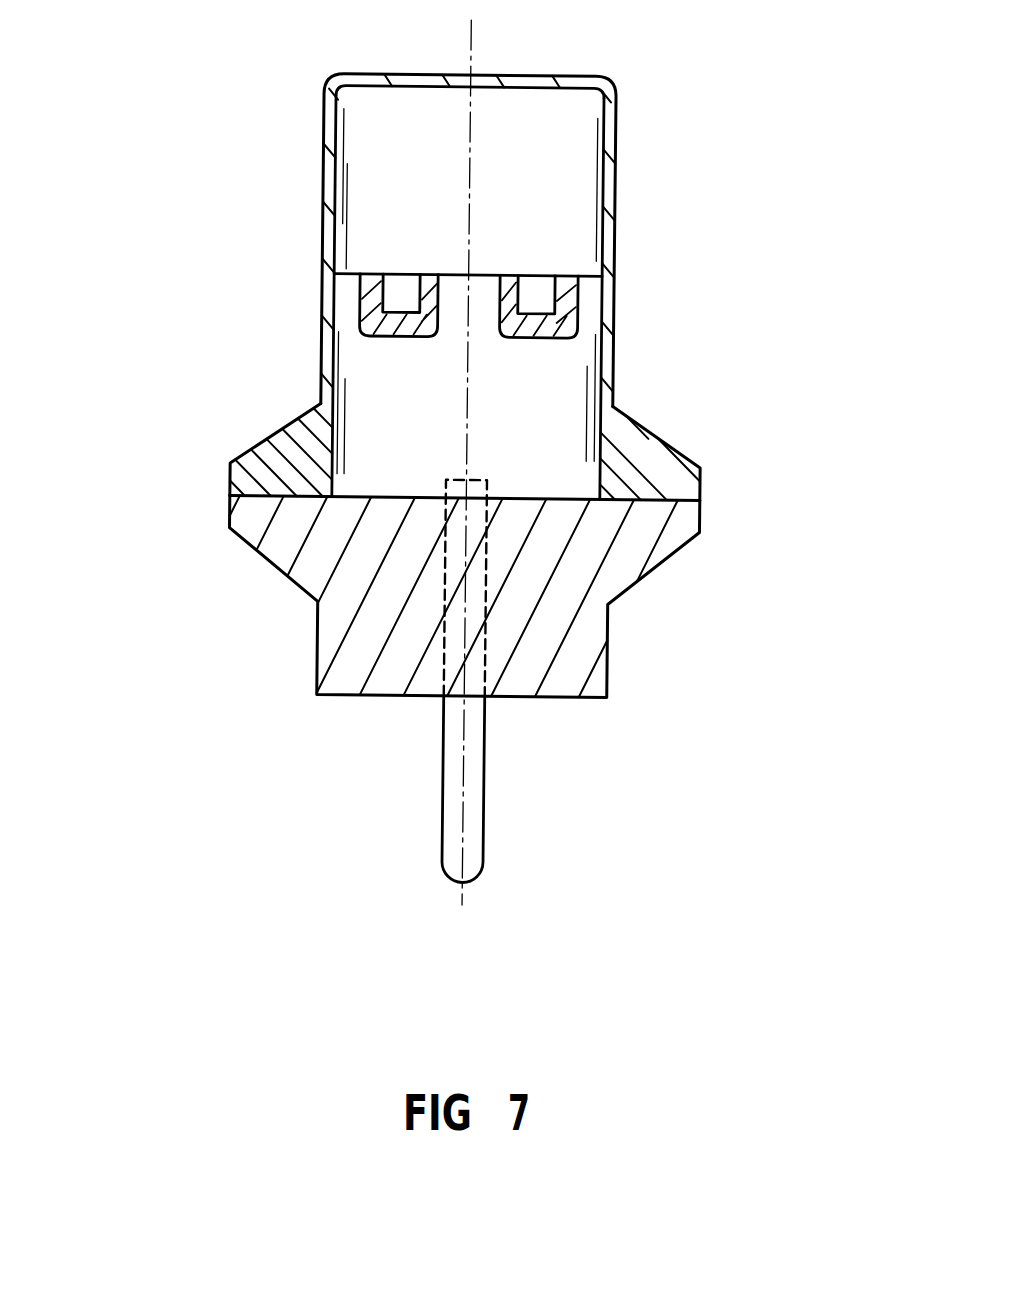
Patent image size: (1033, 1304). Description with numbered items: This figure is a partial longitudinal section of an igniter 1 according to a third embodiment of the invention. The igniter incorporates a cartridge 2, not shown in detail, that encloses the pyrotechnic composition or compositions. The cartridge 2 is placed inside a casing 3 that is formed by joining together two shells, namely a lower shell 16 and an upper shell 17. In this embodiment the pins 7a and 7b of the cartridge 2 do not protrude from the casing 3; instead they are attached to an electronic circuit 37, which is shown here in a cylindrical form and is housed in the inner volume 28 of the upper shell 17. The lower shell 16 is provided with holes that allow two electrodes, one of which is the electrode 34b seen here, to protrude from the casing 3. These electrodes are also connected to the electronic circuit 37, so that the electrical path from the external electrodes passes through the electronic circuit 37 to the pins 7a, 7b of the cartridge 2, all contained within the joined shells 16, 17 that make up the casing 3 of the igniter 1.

The valve assembly 1 is at (663, 217).
The cartridge 2 is at (508, 167).
The casing 3 is at (288, 417).
The pin 7a is at (402, 298).
The pin 7b is at (530, 295).
The lower shell 16 is at (608, 598).
The upper shell 17 is at (632, 445).
The inner volume 28 is at (418, 118).
The electrode 34b is at (457, 822).
The electronic circuit 37 is at (400, 467).